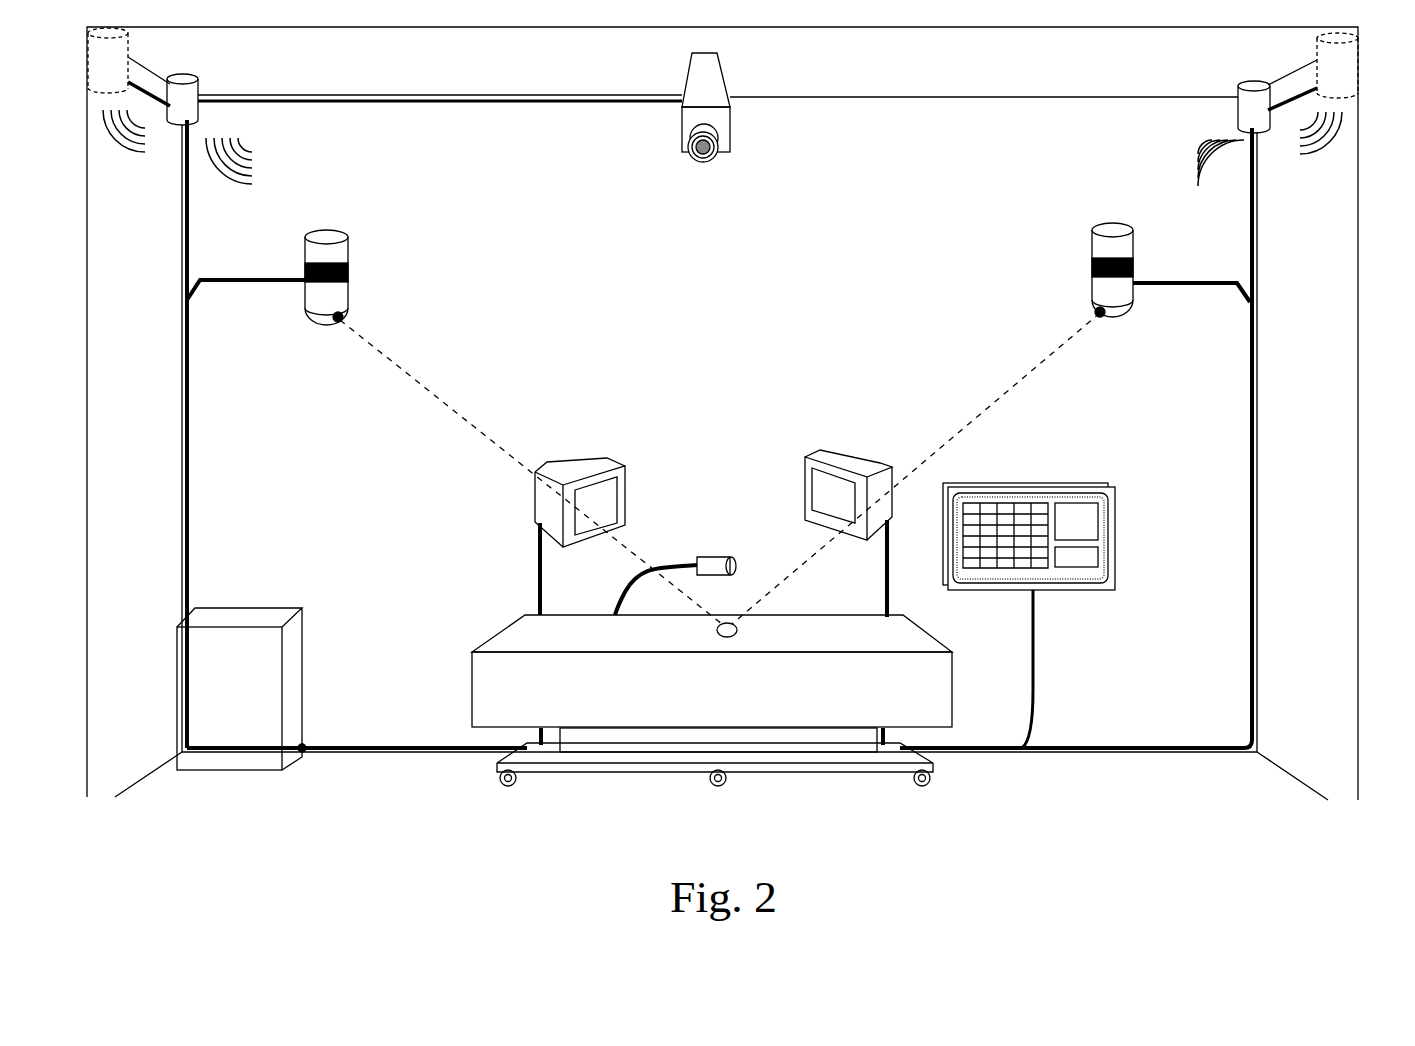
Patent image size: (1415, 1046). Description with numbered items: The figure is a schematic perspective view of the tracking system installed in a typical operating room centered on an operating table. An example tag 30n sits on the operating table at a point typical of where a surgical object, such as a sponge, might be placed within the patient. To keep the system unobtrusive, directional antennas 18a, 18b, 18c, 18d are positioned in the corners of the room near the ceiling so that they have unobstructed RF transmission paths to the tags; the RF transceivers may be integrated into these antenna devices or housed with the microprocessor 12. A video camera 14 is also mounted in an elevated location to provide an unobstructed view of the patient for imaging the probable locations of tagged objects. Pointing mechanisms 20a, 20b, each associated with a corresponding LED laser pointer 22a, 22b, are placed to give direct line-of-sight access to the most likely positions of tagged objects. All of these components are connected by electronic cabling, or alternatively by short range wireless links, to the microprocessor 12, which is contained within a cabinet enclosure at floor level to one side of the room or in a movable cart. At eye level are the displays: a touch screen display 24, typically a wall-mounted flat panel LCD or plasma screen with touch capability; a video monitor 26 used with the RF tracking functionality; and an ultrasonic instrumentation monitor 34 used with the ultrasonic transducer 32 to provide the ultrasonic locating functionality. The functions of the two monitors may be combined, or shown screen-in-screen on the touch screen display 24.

The microprocessor 12 is at (240, 606).
The video camera 14 is at (701, 53).
The directional antenna 18a is at (103, 67).
The directional antenna 18b is at (199, 108).
The directional antenna 18c is at (1237, 120).
The directional antenna 18d is at (1342, 75).
The pointing mechanism 20a is at (327, 229).
The pointing mechanism 20b is at (1113, 223).
The LED laser pointer 22a is at (338, 323).
The LED laser pointer 22b is at (1101, 318).
The touch screen display 24 is at (1116, 537).
The video monitor 26 is at (627, 485).
The tag 30n is at (727, 640).
The ultrasonic transducer 32 is at (716, 557).
The ultrasonic instrumentation monitor 34 is at (856, 452).